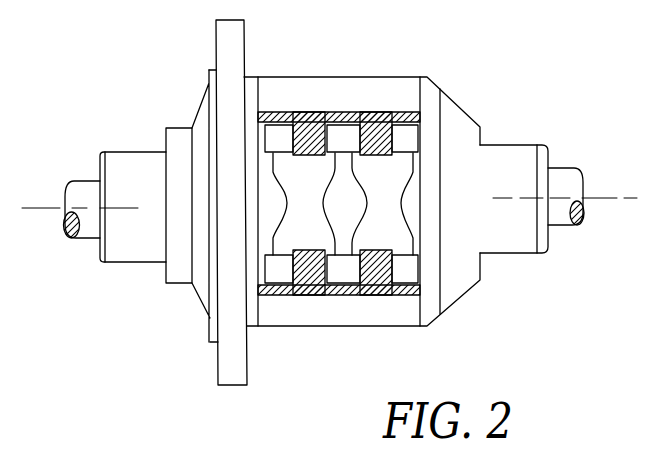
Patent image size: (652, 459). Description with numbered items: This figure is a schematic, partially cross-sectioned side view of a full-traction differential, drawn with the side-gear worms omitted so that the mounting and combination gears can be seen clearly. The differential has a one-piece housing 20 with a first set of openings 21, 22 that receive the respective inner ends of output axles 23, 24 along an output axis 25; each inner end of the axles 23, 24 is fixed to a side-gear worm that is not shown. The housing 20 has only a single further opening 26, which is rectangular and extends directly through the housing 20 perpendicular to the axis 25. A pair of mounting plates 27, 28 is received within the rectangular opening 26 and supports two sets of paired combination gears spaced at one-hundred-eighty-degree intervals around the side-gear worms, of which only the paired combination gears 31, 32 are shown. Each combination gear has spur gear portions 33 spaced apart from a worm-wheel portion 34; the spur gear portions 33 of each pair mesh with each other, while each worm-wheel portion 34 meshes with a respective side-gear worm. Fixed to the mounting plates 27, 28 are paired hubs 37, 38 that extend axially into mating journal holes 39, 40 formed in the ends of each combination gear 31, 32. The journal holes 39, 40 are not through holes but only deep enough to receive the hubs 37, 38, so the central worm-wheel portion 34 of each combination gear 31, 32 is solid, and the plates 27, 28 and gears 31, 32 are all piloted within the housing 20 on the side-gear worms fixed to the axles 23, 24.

The one-piece housing 20 is at (402, 90).
The opening 21 is at (100, 167).
The opening 22 is at (548, 162).
The output axle 23 is at (92, 232).
The output axle 24 is at (563, 223).
The output axis 25 is at (608, 194).
The rectangular opening 26 is at (272, 247).
The mounting plate 27 is at (323, 117).
The mounting plate 28 is at (363, 292).
The combination gear 31 is at (293, 180).
The combination gear 32 is at (388, 215).
The spur gear portions 33 is at (408, 137).
The worm-wheel portion 34 is at (397, 191).
The hub 37 is at (337, 140).
The hub 38 is at (336, 270).
The journal hole 39 is at (300, 138).
The journal hole 40 is at (305, 270).